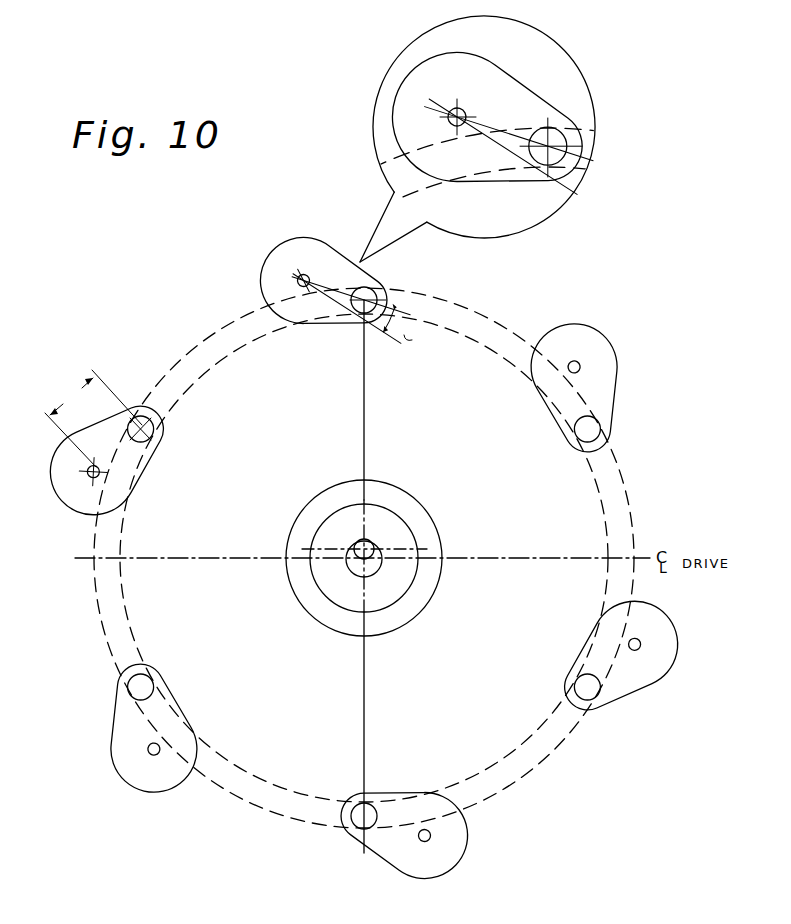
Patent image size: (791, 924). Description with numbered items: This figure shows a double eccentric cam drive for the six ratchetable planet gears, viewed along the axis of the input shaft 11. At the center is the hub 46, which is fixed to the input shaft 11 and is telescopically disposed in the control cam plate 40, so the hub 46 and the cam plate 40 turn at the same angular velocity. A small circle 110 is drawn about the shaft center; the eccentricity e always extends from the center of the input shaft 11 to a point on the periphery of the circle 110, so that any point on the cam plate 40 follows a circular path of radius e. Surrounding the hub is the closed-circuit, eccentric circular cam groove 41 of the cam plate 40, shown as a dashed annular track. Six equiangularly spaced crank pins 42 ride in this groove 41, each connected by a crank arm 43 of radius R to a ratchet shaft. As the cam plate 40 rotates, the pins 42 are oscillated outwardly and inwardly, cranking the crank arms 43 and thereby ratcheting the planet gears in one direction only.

The input shaft 11 is at (353, 573).
The circle 110 is at (376, 545).
The cam plate 40 is at (378, 622).
The cam groove 41 is at (603, 499).
The crank pins 42 is at (600, 438).
The crank arms 43 is at (273, 255).
The hub 46 is at (332, 529).